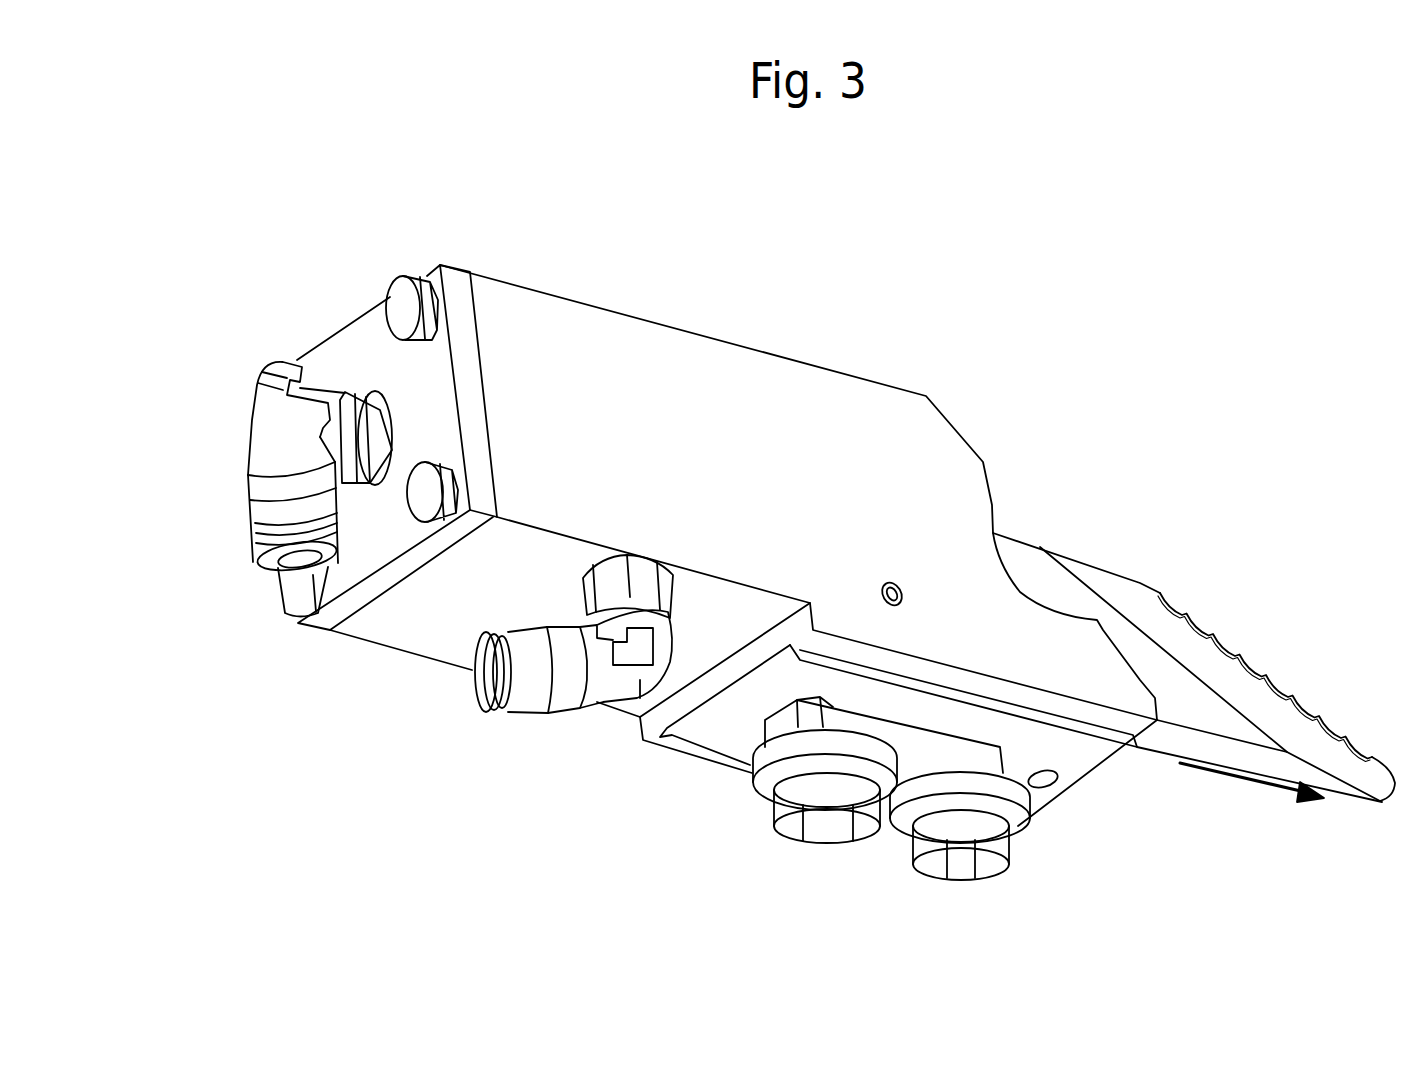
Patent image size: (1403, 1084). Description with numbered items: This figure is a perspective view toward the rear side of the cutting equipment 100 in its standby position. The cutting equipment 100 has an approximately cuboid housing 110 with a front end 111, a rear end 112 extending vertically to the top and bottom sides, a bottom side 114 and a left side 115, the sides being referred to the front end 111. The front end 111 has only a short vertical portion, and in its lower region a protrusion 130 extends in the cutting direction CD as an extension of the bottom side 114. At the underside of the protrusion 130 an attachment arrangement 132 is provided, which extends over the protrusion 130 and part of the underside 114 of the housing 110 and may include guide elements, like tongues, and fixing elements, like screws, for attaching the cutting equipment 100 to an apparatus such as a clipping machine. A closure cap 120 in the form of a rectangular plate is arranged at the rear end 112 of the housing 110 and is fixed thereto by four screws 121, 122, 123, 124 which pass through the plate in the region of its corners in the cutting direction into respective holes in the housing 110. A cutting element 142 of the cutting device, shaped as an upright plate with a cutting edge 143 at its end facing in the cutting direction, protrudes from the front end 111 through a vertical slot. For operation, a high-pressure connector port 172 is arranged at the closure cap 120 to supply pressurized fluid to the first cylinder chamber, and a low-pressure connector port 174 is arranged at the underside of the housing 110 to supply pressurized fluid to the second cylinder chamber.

The cutting equipment 100 is at (1100, 215).
The housing 110 is at (868, 292).
The front end 111 is at (990, 507).
The rear end 112 is at (480, 278).
The bottom side 114 is at (506, 562).
The left side 115 is at (667, 397).
The closure cap 120 is at (457, 282).
The screw 121 is at (425, 492).
The screw 122 is at (402, 302).
The screw 123 is at (277, 373).
The screw 124 is at (293, 590).
The protrusion 130 is at (1093, 670).
The attachment arrangement 132 is at (852, 858).
The cutting element 142 is at (1062, 589).
The cutting edge 143 is at (1195, 620).
The high-pressure connector port 172 is at (277, 505).
The low-pressure connector port 174 is at (560, 670).